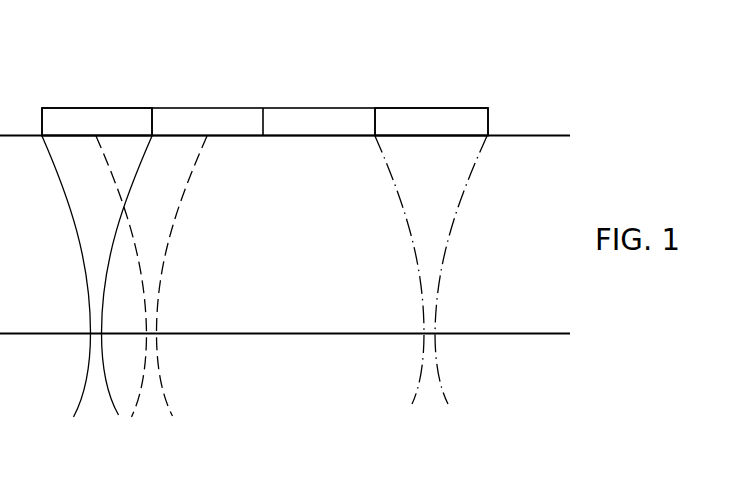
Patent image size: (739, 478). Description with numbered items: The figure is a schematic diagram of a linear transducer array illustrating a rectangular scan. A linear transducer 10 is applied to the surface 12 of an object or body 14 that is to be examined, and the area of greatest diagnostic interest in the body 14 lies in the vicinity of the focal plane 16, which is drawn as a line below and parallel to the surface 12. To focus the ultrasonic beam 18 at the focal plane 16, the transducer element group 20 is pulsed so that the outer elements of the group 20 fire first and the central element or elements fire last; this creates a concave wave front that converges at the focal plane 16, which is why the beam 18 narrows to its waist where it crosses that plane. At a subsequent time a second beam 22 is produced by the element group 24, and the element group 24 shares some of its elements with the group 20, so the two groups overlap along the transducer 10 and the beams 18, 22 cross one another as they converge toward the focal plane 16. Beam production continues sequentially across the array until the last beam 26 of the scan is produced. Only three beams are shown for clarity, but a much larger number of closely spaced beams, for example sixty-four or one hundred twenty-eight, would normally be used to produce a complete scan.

The linear transducer 10 is at (288, 84).
The surface 12 is at (538, 135).
The body 14 is at (540, 277).
The focal plane 16 is at (502, 334).
The ultrasonic beam 18 is at (100, 230).
The transducer element group 20 is at (152, 98).
The beam 22 is at (162, 230).
The element group 24 is at (207, 56).
The last beam 26 is at (488, 99).